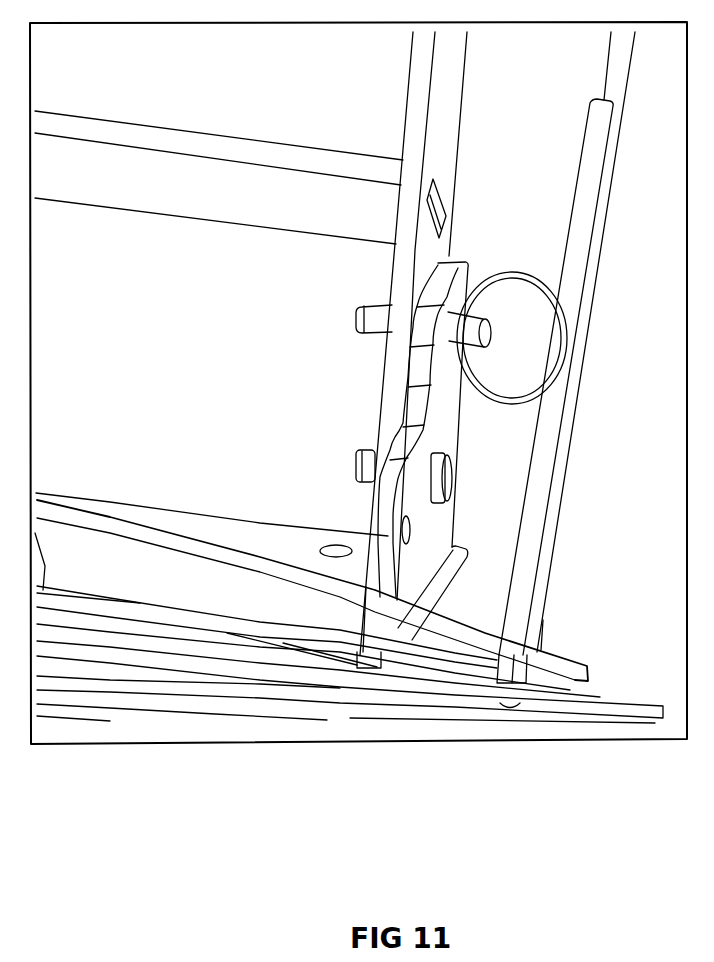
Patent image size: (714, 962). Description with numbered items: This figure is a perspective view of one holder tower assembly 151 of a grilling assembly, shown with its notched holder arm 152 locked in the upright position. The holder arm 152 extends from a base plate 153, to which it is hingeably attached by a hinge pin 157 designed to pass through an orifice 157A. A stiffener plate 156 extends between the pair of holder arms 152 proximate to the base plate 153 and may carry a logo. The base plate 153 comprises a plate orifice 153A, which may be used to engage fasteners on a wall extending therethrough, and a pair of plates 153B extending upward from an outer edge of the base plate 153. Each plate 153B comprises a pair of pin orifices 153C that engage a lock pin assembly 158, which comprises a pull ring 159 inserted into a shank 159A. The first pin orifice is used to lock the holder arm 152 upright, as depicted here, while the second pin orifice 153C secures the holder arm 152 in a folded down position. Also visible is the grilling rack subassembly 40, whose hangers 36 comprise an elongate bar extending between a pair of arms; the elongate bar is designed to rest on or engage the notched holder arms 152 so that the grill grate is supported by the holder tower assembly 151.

The hanger 36 is at (542, 621).
The grilling rack subassembly 40 is at (612, 693).
The holder tower assembly 151 is at (567, 490).
The notched holder arm 152 is at (467, 70).
The base plate 153 is at (220, 517).
The plate orifice 153A is at (346, 540).
The plate 153B is at (463, 398).
The pin orifice 153C is at (410, 543).
The stiffener plate 156 is at (153, 131).
The hinge pin 157 is at (364, 440).
The orifice 157A is at (354, 496).
The lock pin assembly 158 is at (592, 340).
The pull ring 159 is at (512, 276).
The shank 159A is at (356, 305).